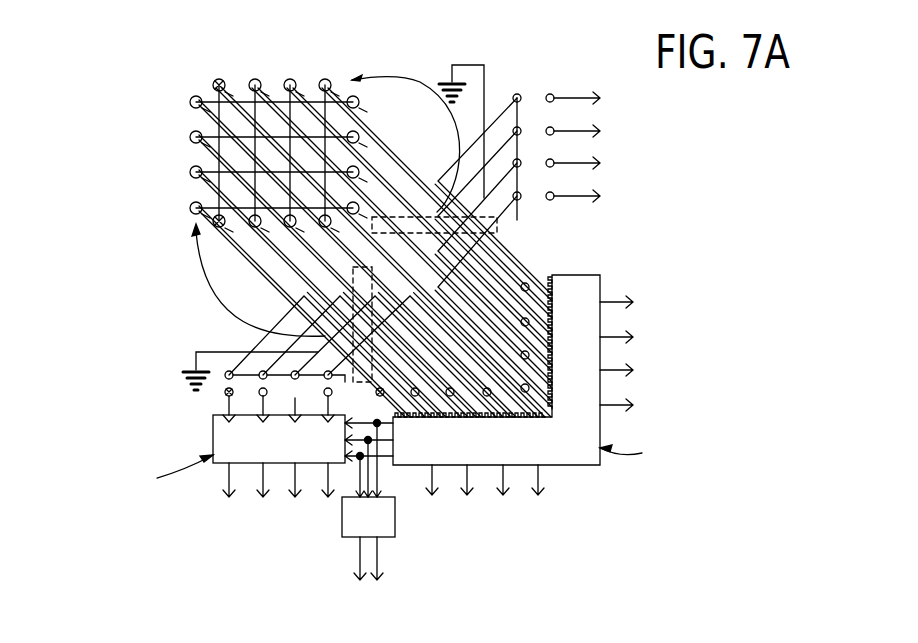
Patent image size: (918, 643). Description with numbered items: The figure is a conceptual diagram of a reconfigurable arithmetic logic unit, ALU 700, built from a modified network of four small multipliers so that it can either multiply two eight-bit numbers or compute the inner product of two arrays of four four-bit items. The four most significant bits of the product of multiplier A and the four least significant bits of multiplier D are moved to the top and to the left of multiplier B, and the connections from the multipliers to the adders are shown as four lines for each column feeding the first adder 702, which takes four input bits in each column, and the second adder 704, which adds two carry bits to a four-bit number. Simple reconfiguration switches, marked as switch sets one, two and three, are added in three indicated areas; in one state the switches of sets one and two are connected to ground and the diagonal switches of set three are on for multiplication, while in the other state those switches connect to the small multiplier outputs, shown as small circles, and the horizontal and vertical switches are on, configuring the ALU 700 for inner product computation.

The ALU 700 is at (675, 175).
The adder 1 702 is at (570, 466).
The adder 2 704 is at (213, 437).